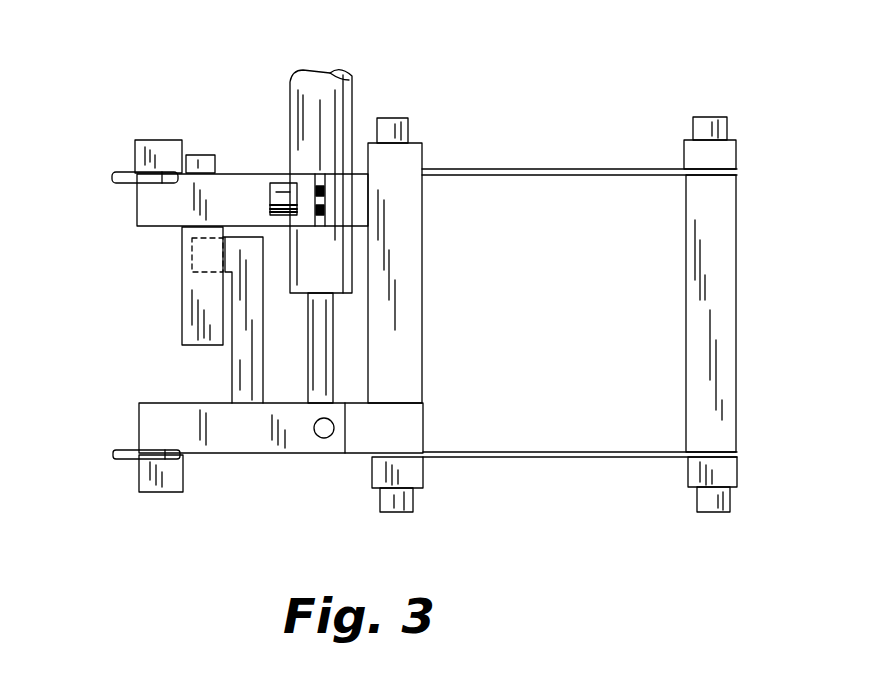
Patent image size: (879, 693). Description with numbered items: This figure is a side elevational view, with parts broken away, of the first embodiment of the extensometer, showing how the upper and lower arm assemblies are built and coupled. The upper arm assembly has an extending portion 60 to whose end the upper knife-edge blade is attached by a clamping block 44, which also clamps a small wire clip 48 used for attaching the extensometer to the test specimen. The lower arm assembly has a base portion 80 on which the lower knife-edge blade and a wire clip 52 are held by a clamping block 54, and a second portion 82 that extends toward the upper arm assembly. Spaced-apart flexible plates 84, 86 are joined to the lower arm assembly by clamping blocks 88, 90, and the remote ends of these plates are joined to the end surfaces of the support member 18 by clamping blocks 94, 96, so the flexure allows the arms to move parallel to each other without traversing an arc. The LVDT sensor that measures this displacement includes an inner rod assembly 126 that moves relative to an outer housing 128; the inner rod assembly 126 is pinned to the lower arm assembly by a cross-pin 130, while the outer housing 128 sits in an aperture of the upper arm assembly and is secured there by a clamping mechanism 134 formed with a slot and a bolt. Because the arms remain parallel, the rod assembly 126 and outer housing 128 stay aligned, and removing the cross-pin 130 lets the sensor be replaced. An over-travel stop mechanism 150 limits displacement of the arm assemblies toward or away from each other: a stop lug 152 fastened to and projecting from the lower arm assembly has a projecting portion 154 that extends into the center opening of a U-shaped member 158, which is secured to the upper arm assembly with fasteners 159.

The support member 18 is at (737, 322).
The clamping block 44 is at (157, 140).
The wire clip 48 is at (122, 170).
The wire clip 52 is at (125, 460).
The clamping block 54 is at (185, 473).
The extending portion 60 is at (137, 212).
The base portion 80 is at (296, 455).
The second portion 82 is at (422, 322).
The flexible plate 84 is at (583, 169).
The flexible plate 86 is at (600, 452).
The clamping block 88 is at (426, 145).
The clamping block 90 is at (423, 470).
The clamping block 94 is at (736, 152).
The clamping block 96 is at (688, 467).
The inner rod assembly 126 is at (333, 366).
The outer housing 128 is at (352, 105).
The cross-pin 130 is at (334, 428).
The clamping mechanism 134 is at (272, 120).
The over-travel stop mechanism 150 is at (152, 328).
The stop lug 152 is at (232, 367).
The projecting portion 154 is at (192, 256).
The U-shaped member 158 is at (182, 290).
The fasteners 159 is at (200, 155).